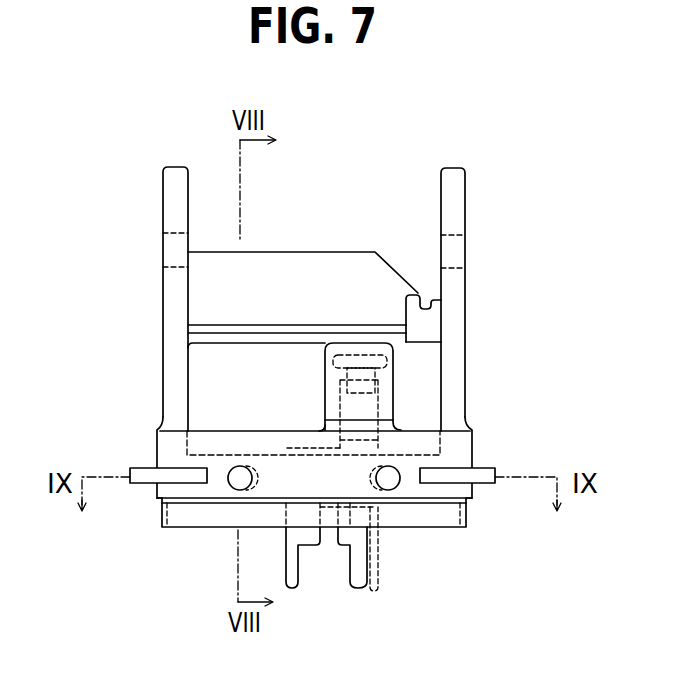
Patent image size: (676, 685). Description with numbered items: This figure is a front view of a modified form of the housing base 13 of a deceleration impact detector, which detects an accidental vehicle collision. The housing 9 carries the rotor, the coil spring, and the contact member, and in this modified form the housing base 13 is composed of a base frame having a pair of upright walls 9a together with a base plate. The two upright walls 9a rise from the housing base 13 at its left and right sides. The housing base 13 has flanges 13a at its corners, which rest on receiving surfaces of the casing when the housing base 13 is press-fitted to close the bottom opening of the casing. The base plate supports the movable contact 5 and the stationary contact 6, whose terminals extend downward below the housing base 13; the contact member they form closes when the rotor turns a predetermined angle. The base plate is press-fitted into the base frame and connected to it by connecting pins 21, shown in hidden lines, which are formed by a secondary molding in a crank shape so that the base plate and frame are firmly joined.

The upright walls 9a is at (457, 193).
The housing 9 is at (472, 348).
The housing base 13 is at (417, 493).
The flanges 13a is at (487, 486).
The connecting pins 21 is at (393, 487).
The movable contact 5 is at (292, 590).
The stationary contact 6 is at (360, 590).